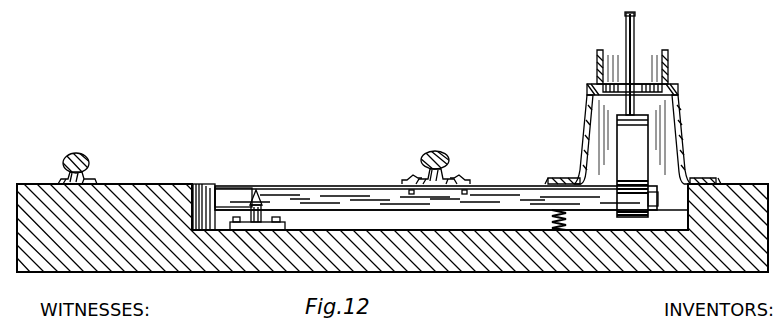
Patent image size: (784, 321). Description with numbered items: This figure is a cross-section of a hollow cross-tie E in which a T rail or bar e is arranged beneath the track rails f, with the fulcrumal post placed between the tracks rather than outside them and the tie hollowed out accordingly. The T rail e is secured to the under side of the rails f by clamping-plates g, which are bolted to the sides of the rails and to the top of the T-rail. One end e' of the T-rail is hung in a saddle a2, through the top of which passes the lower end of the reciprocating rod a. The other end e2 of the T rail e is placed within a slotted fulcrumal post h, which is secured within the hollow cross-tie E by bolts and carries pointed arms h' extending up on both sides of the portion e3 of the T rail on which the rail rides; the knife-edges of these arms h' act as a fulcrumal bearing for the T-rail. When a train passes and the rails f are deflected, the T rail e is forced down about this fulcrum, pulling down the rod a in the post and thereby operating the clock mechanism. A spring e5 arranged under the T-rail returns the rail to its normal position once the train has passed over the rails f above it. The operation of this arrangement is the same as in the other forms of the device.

The hollow cross-tie E is at (545, 272).
The rail f is at (90, 161).
The clamping-plate g is at (413, 177).
The T rail or bar e is at (436, 186).
The other end of the T rail e2 is at (227, 186).
The portion of the T rail e3 is at (451, 219).
The spring e5 is at (567, 219).
The one end of the T-rail e' is at (664, 204).
The pointed arms h' is at (263, 192).
The slotted fulcrumal post h is at (263, 219).
The reciprocating rod a is at (634, 37).
The saddle a2 is at (632, 166).